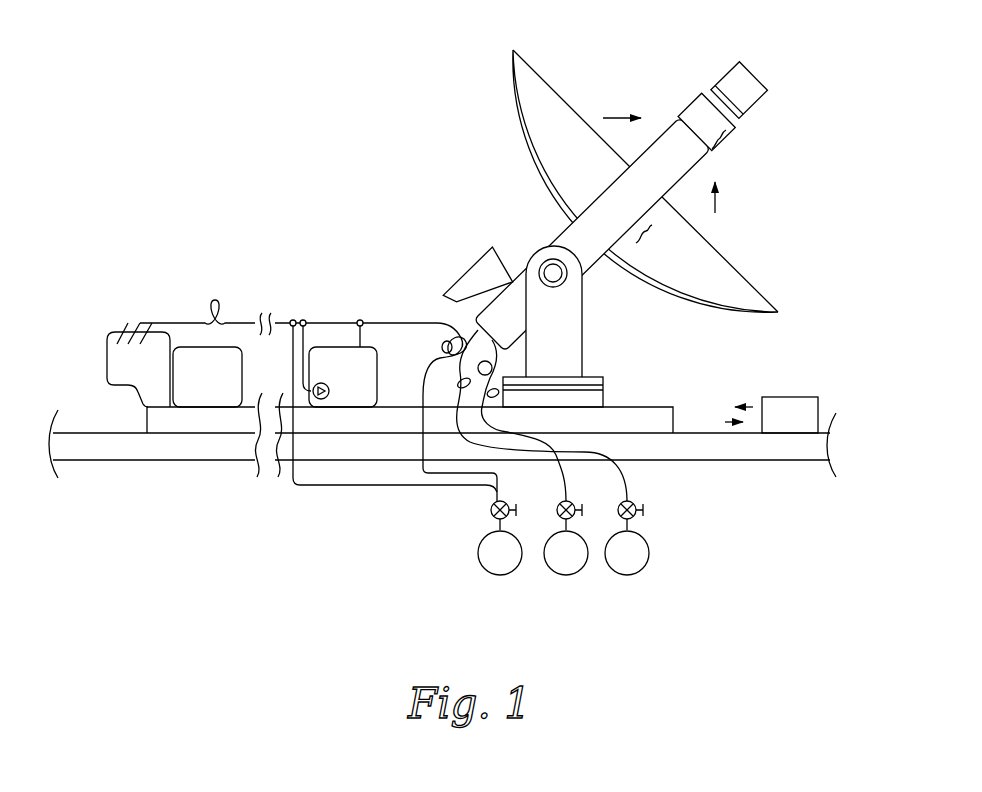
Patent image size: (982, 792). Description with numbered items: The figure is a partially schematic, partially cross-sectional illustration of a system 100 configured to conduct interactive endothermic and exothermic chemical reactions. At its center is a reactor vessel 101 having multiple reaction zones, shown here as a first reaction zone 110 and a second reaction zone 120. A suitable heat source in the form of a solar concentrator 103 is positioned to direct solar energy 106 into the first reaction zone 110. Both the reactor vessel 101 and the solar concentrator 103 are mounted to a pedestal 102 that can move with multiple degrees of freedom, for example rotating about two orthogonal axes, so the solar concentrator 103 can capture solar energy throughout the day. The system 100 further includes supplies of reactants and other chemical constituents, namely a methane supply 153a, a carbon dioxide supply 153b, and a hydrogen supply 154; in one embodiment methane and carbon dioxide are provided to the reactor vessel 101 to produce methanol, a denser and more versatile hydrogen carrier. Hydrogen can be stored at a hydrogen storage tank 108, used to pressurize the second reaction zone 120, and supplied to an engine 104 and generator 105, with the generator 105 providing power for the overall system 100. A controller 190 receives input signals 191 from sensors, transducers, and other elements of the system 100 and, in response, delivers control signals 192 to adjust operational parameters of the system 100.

The system 100 is at (360, 192).
The reactor vessel 101 is at (560, 238).
The pedestal 102 is at (612, 356).
The solar concentrator 103 is at (528, 92).
The engine 104 is at (107, 355).
The generator 105 is at (206, 384).
The solar energy 106 is at (622, 114).
The hydrogen storage tank 108 is at (348, 383).
The first reaction zone 110 is at (724, 111).
The second reaction zone 120 is at (659, 237).
The methane supply 153a is at (501, 580).
The carbon dioxide supply 153b is at (567, 580).
The hydrogen supply 154 is at (623, 577).
The controller 190 is at (820, 402).
The input signals 191 is at (733, 425).
The control signals 192 is at (745, 403).